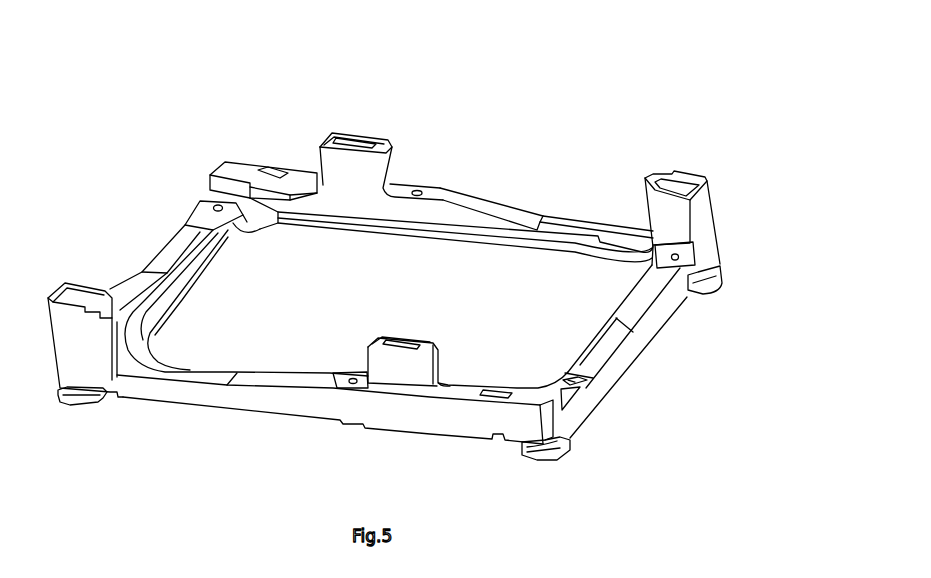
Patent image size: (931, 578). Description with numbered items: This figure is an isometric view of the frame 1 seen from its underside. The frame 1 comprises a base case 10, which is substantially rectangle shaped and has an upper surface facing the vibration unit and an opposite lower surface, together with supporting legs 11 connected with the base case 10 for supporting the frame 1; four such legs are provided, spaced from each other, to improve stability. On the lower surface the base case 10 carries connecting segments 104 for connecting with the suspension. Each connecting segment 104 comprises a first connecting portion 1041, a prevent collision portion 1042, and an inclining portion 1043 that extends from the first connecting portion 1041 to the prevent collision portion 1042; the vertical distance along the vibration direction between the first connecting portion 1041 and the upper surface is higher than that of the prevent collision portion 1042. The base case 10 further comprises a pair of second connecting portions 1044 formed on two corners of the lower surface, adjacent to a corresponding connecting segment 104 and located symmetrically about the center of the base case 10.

The frame 1 is at (299, 91).
The base case 10 is at (615, 372).
The supporting leg 11 is at (698, 222).
The connecting segment 104 is at (662, 143).
The first connecting portion 1041 is at (428, 187).
The prevent collision portion 1042 is at (573, 227).
The inclining portion 1043 is at (503, 212).
The second connecting portion 1044 is at (208, 205).